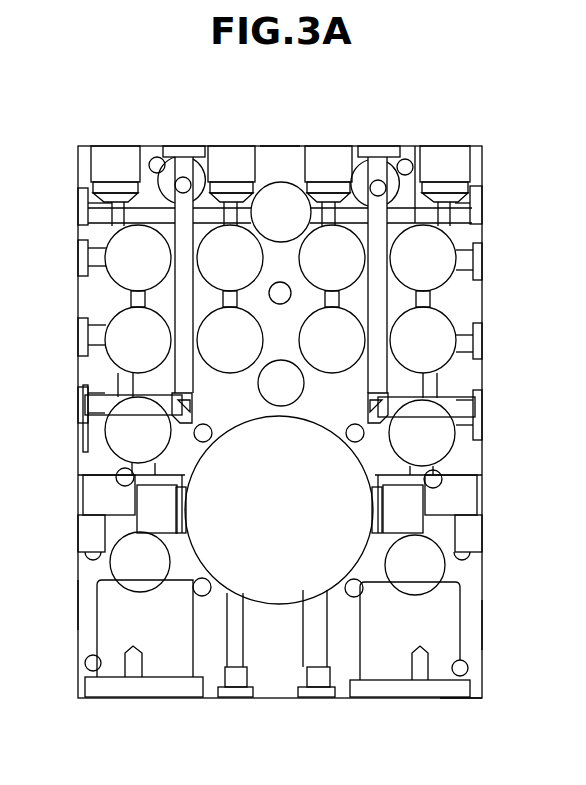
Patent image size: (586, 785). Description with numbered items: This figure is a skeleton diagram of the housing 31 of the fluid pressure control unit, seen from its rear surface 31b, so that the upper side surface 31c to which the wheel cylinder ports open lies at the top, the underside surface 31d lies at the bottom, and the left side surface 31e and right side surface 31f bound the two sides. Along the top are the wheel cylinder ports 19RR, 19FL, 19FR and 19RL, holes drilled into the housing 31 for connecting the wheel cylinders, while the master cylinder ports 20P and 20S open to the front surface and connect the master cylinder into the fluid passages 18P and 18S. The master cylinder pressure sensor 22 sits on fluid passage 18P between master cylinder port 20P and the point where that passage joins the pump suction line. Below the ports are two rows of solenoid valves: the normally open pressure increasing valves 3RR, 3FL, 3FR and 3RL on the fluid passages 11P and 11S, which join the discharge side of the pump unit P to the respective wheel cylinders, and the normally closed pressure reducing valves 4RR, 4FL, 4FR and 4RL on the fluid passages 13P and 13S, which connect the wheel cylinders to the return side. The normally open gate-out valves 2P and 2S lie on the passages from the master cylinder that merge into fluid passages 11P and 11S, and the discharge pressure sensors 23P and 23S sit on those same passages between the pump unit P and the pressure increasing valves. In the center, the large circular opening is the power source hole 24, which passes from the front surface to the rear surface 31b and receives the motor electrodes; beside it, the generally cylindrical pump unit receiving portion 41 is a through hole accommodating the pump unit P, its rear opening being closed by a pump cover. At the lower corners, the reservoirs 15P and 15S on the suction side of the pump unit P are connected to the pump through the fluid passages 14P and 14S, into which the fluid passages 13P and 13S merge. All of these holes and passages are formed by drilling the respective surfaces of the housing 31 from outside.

The housing 31 is at (482, 142).
The rear surface 31b is at (278, 698).
The upper side surface 31c is at (282, 150).
The underside surface 31d is at (470, 698).
The left side surface 31e is at (483, 636).
The right side surface 31f is at (76, 598).
The wheel cylinder port 19RR is at (107, 157).
The wheel cylinder port 19FL is at (222, 170).
The wheel cylinder port 19FR is at (322, 165).
The wheel cylinder port 19RL is at (440, 158).
The master cylinder port 20P is at (156, 160).
The master cylinder port 20S is at (380, 185).
The master cylinder pressure sensor 22 is at (280, 150).
The pressure increasing valve 3RR is at (110, 257).
The pressure increasing valve 3FL is at (232, 248).
The pressure increasing valve 3FR is at (336, 242).
The pressure increasing valve 3RL is at (447, 230).
The pressure reducing valve 4RR is at (110, 337).
The pressure reducing valve 4FL is at (205, 343).
The pressure reducing valve 4FR is at (342, 332).
The pressure reducing valve 4RL is at (450, 312).
The fluid passage 18P is at (107, 213).
The fluid passage 18S is at (455, 213).
The fluid passage 11P is at (173, 392).
The fluid passage 11S is at (410, 392).
The fluid passage 13P is at (96, 407).
The fluid passage 13S is at (440, 405).
The gate-out valve 2P is at (107, 432).
The gate-out valve 2S is at (447, 440).
The power source hole 24 is at (279, 418).
The discharge pressure sensor 23P is at (130, 534).
The discharge pressure sensor 23S is at (435, 545).
The fluid passage 14P is at (180, 560).
The fluid passage 14S is at (380, 560).
The reservoir 15P is at (110, 698).
The reservoir 15S is at (385, 698).
The pump unit receiving portion 41 is at (322, 582).
The pump unit P is at (210, 604).